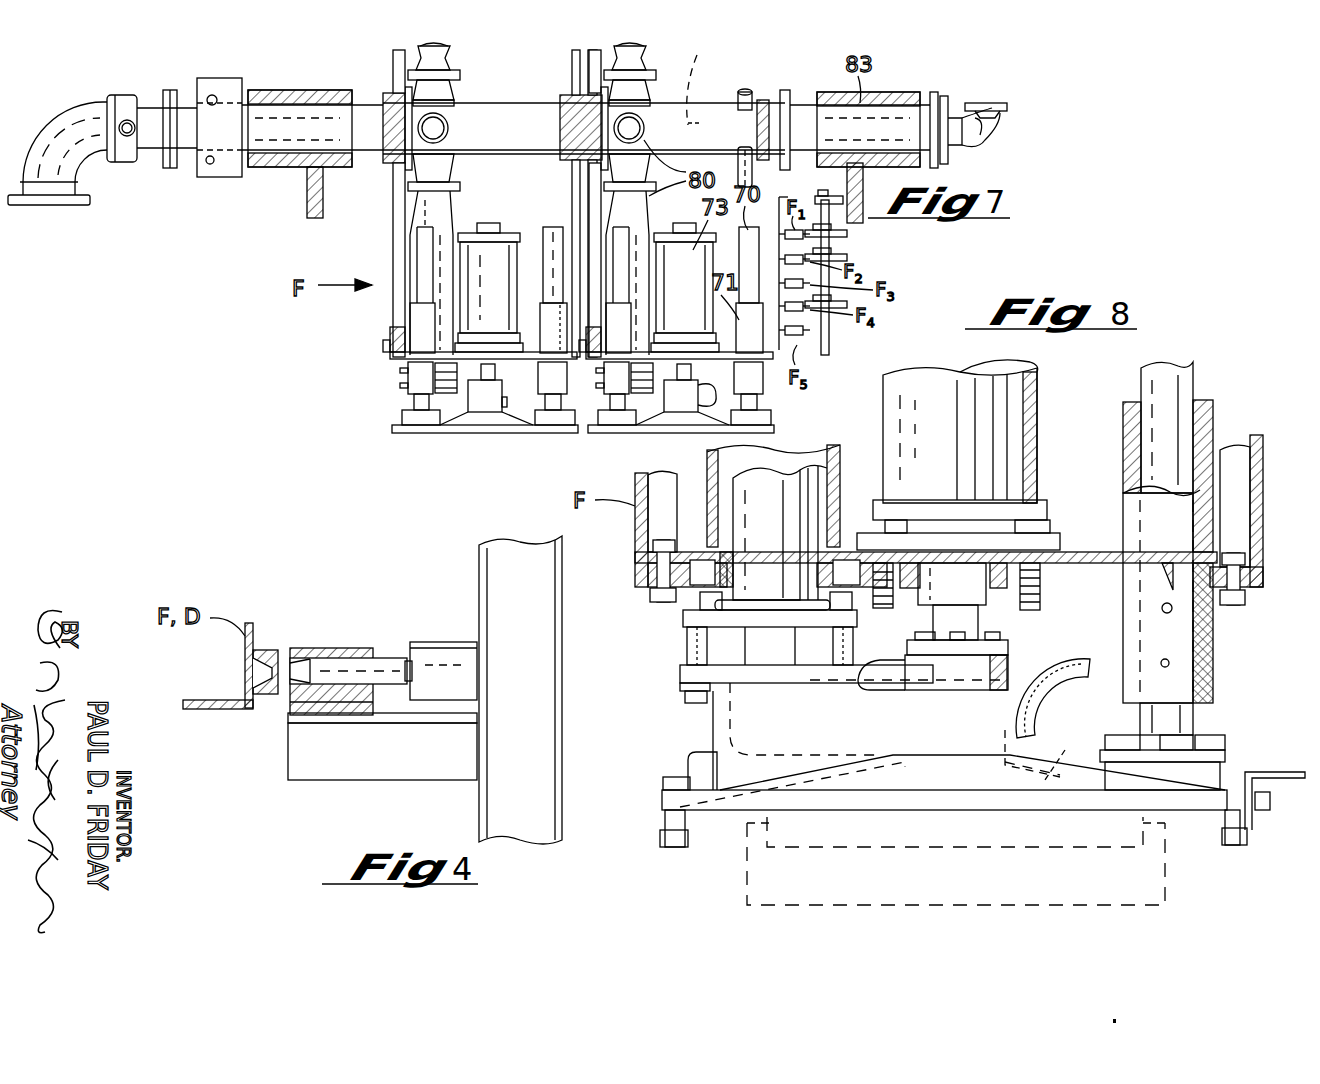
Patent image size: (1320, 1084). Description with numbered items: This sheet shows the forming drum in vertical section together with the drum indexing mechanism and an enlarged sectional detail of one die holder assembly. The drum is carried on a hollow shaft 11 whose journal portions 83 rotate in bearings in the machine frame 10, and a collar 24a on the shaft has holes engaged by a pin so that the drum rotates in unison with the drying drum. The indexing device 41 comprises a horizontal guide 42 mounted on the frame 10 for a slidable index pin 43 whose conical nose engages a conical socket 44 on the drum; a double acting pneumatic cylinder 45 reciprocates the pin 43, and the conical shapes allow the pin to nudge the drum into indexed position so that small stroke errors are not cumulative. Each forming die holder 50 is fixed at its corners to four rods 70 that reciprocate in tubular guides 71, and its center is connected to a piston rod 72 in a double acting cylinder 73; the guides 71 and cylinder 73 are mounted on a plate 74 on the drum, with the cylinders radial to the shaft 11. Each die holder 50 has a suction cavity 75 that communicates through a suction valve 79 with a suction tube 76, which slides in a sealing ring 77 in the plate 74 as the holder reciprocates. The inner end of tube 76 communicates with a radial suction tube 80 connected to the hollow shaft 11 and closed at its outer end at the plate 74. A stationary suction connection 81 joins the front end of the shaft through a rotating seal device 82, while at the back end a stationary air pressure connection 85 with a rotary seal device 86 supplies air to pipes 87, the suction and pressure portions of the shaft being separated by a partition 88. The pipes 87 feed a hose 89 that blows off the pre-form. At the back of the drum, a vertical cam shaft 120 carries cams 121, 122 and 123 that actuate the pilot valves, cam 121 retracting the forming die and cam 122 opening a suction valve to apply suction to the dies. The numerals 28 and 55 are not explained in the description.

In FIG. 7, the frame 10 is at (307, 197).
In FIG. 4, the frame 10 is at (510, 572).
In FIG. 7, the shaft 11 is at (518, 103).
In FIG. 7, the collar 24a is at (213, 178).
In FIG. 7, the clamp holes 28 is at (212, 95).
In FIG. 4, the index device 41 is at (262, 745).
In FIG. 4, the horizontal guide 42 is at (358, 648).
In FIG. 4, the index pin 43 is at (316, 660).
In FIG. 4, the conical socket 44 is at (268, 652).
In FIG. 4, the double acting pneumatic cylinder 45 is at (436, 642).
In FIG. 7, the forming die holder 50 is at (618, 434).
In FIG. 8, the forming die holder 50 is at (662, 800).
In FIG. 8, the pit outline 55 is at (1165, 895).
In FIG. 7, the rod 70 is at (552, 230).
In FIG. 8, the rod 70 is at (1140, 376).
In FIG. 7, the tubular guide 71 is at (543, 320).
In FIG. 8, the tubular guide 71 is at (1130, 438).
In FIG. 8, the piston rod 72 is at (983, 614).
In FIG. 7, the double acting cylinder 73 is at (497, 250).
In FIG. 8, the double acting cylinder 73 is at (1037, 412).
In FIG. 8, the plate 74 is at (1093, 552).
In FIG. 8, the suction cavity 75 is at (1046, 753).
In FIG. 8, the suction tube 76 is at (775, 490).
In FIG. 8, the sealing ring 77 is at (735, 566).
In FIG. 8, the suction valve 79 is at (690, 652).
In FIG. 7, the radial suction tube 80 is at (448, 140).
In FIG. 8, the radial suction tube 80 is at (820, 448).
In FIG. 7, the stationary suction connection 81 is at (50, 205).
In FIG. 7, the rotating seal device 82 is at (115, 165).
In FIG. 7, the journal portion 83 is at (300, 103).
In FIG. 7, the stationary air pressure connection 85 is at (985, 103).
In FIG. 7, the rotary seal device 86 is at (985, 145).
In FIG. 7, the pipe 87 is at (736, 175).
In FIG. 7, the partition 88 is at (708, 87).
In FIG. 8, the hose 89 is at (1058, 692).
In FIG. 7, the vertical cam shaft 120 is at (830, 338).
In FIG. 7, the cam 121 is at (815, 230).
In FIG. 7, the cam 122 is at (847, 256).
In FIG. 7, the cam 123 is at (847, 302).